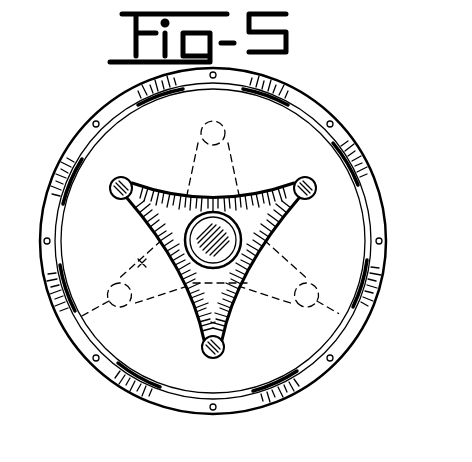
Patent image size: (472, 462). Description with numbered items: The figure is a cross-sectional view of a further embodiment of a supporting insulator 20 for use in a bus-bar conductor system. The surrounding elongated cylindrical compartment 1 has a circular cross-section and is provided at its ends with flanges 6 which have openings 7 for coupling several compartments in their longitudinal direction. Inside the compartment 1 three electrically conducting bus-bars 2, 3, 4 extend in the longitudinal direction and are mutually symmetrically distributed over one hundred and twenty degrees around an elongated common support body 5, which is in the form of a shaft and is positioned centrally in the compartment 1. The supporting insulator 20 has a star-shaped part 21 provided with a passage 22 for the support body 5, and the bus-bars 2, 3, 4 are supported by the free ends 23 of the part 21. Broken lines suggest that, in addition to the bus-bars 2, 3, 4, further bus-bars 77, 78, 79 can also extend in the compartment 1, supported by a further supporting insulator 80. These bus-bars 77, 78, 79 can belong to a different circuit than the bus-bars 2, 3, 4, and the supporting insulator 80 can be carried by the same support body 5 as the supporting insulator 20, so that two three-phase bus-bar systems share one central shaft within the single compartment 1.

The compartment 1 is at (373, 199).
The bus-bar 2 is at (114, 182).
The bus-bar 3 is at (308, 197).
The bus-bar 4 is at (219, 356).
The support body 5 is at (200, 258).
The flange 6 is at (303, 383).
The opening 7 is at (214, 409).
The supporting insulator 20 is at (277, 236).
The star-shaped part 21 is at (232, 294).
The passage 22 is at (232, 258).
The free end 23 is at (134, 186).
The further bus-bar 77 is at (347, 316).
The further bus-bar 78 is at (78, 318).
The further bus-bar 79 is at (228, 132).
The supporting insulator 80 is at (139, 261).